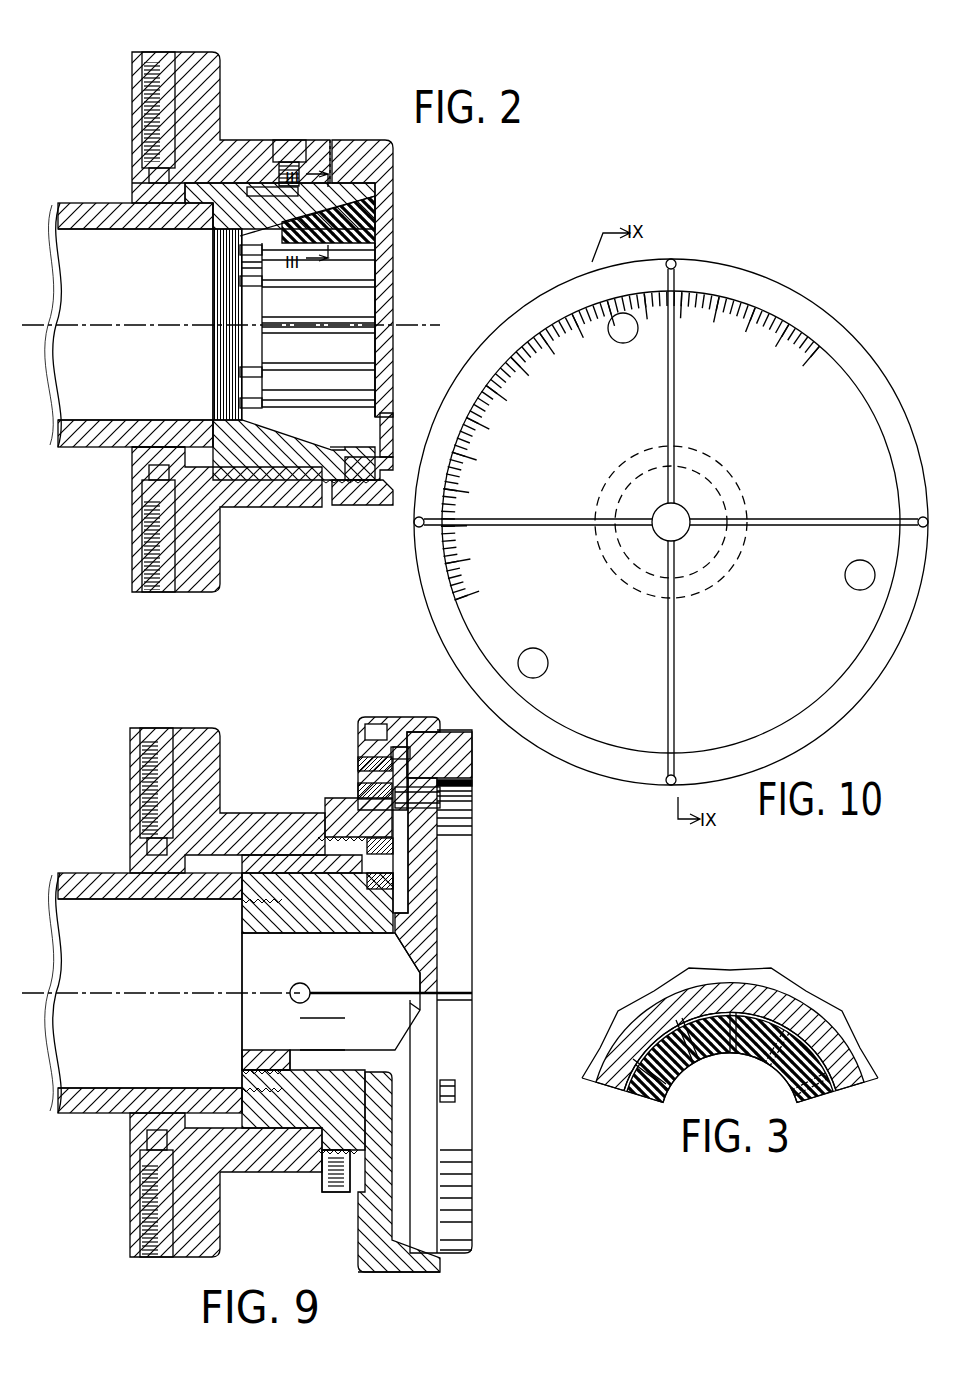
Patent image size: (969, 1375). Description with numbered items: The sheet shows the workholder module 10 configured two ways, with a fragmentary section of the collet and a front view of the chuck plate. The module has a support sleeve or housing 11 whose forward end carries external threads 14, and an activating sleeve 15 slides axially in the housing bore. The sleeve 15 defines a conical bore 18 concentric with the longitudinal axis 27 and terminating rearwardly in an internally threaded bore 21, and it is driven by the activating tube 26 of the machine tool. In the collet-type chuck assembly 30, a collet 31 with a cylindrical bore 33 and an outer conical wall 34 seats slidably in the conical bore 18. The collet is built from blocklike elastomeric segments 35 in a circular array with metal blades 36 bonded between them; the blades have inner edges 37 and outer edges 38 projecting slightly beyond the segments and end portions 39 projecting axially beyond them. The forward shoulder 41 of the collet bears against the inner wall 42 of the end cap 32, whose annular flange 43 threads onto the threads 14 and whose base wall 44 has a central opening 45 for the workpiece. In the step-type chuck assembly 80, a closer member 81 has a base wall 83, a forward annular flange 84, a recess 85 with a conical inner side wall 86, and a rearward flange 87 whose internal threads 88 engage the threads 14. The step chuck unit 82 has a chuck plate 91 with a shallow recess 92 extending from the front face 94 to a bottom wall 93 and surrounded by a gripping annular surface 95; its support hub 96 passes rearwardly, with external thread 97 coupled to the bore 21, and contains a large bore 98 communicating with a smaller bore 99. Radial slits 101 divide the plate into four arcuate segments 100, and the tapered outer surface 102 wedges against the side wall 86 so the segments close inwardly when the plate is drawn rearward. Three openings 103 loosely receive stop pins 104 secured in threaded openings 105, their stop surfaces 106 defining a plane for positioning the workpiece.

In FIG. 2, the workholder module 10 is at (101, 162).
In FIG. 9, the workholder module 10 is at (108, 1146).
In FIG. 2, the support sleeve or housing 11 is at (264, 490).
In FIG. 9, the support sleeve or housing 11 is at (262, 832).
In FIG. 2, the external threads 14 is at (340, 140).
In FIG. 9, the external threads 14 is at (320, 1172).
In FIG. 2, the activating sleeve 15 is at (238, 436).
In FIG. 9, the activating sleeve 15 is at (258, 895).
In FIG. 2, the conical bore or wall 18 is at (336, 447).
In FIG. 9, the internally threaded bore 21 is at (250, 938).
In FIG. 2, the activating tube 26 is at (92, 445).
In FIG. 9, the activating tube 26 is at (90, 878).
In FIG. 2, the longitudinal axis 27 is at (46, 325).
In FIG. 9, the longitudinal axis 27 is at (150, 993).
In FIG. 2, the collet-type chuck assembly 30 is at (333, 72).
In FIG. 2, the collet 31 is at (390, 352).
In FIG. 3, the collet 31 is at (836, 1104).
In FIG. 2, the end cap 32 is at (406, 165).
In FIG. 3, the end cap 32 is at (730, 1029).
In FIG. 3, the cylindrical bore 33 is at (730, 1051).
In FIG. 2, the outer conical wall 34 is at (308, 470).
In FIG. 2, the blocklike segments 35 is at (368, 243).
In FIG. 3, the blocklike segments 35 is at (712, 1030).
In FIG. 2, the metal plates or blades 36 is at (355, 285).
In FIG. 3, the metal plates or blades 36 is at (700, 1064).
In FIG. 3, the inner axially-extending edges 37 is at (795, 1085).
In FIG. 3, the outer longitudinally extending edges 38 is at (740, 1010).
In FIG. 2, the end portions 39 is at (240, 266).
In FIG. 2, the annular step-like shoulder 41 is at (392, 426).
In FIG. 2, the inner wall 42 is at (320, 196).
In FIG. 2, the annular flange 43 is at (362, 503).
In FIG. 2, the end or base wall 44 is at (385, 458).
In FIG. 2, the central opening 45 is at (392, 389).
In FIG. 9, the step-type chuck assembly 80 is at (293, 727).
In FIG. 9, the closer or end member 81 is at (432, 1280).
In FIG. 9, the step chuck unit 82 is at (488, 955).
In FIG. 9, the base wall 83 is at (372, 1218).
In FIG. 9, the forwardly projecting annular flange 84 is at (392, 1266).
In FIG. 9, the forwardly-directed recess 85 is at (395, 1185).
In FIG. 9, the inner annular side wall 86 is at (376, 735).
In FIG. 9, the further annular flange 87 is at (338, 812).
In FIG. 9, the internal threads 88 is at (308, 860).
In FIG. 9, the chuck plate 91 is at (432, 860).
In FIG. 9, the shallow cylindrical recess 92 is at (464, 1012).
In FIG. 9, the bottom wall 93 is at (440, 1135).
In FIG. 9, the front axial face 94 is at (474, 750).
In FIG. 10, the radially inwardly directed annular surface 95 is at (852, 645).
In FIG. 9, the radially inwardly directed annular surface 95 is at (465, 1218).
In FIG. 9, the support hub 96 is at (342, 1060).
In FIG. 9, the external thread 97 is at (246, 1076).
In FIG. 9, the large diameter bore 98 is at (262, 1050).
In FIG. 9, the smaller diameter bore 99 is at (420, 1005).
In FIG. 10, the arcuate segments 100 is at (822, 318).
In FIG. 10, the slits or slots 101 is at (558, 520).
In FIG. 9, the slits or slots 101 is at (349, 990).
In FIG. 10, the outer annular surface 102 is at (671, 522).
In FIG. 9, the outer annular surface 102 is at (420, 742).
In FIG. 10, the small openings 103 is at (535, 650).
In FIG. 9, the small openings 103 is at (474, 835).
In FIG. 9, the cylindrical stop pin 104 is at (474, 783).
In FIG. 9, the threaded opening 105 is at (357, 782).
In FIG. 9, the stop surface 106 is at (474, 800).